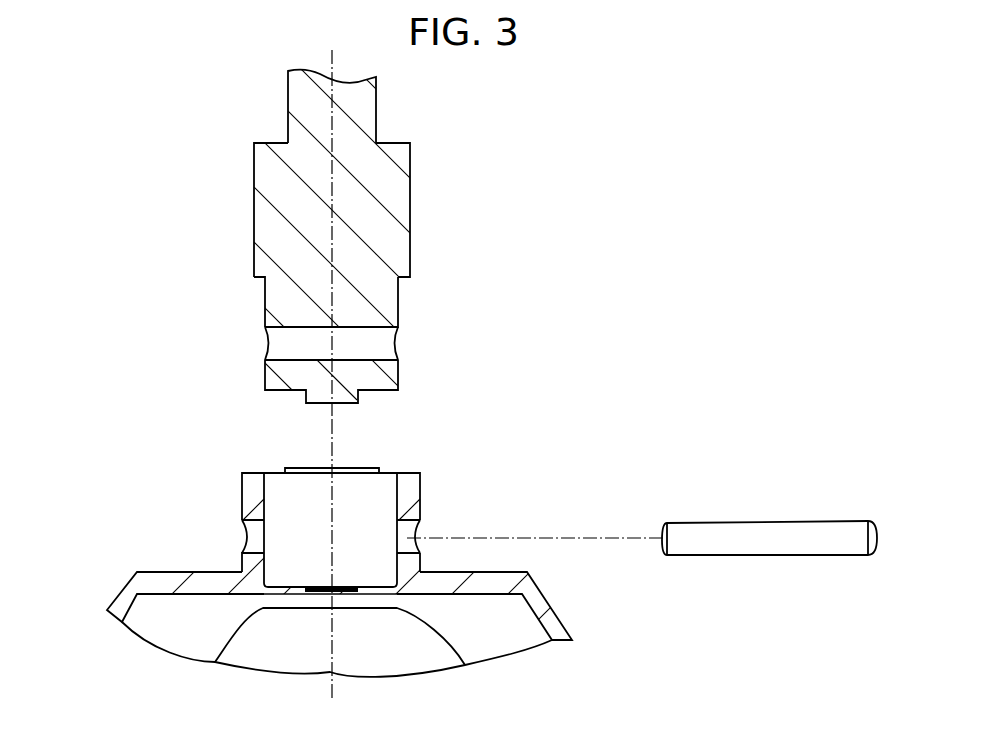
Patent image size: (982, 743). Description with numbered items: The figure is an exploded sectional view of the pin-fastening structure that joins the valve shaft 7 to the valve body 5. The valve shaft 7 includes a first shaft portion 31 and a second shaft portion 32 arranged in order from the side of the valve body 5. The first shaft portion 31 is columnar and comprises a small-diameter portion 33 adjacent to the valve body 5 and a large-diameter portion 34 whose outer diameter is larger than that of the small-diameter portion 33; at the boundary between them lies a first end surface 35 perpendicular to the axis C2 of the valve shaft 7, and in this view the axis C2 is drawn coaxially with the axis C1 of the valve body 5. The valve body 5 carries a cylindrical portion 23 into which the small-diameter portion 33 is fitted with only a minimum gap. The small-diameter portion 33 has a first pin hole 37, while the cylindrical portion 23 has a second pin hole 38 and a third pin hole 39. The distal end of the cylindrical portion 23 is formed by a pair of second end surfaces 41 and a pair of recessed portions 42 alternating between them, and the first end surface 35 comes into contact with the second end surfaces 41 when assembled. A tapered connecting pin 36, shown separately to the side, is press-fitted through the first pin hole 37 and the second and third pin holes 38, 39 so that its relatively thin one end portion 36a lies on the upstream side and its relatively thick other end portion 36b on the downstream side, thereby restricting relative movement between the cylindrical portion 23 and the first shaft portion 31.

The valve body 5 is at (112, 589).
The valve shaft 7 is at (320, 201).
The cylindrical portion 23 is at (331, 487).
The first shaft portion 31 is at (433, 235).
The second shaft portion 32 is at (378, 100).
The small-diameter portion 33 is at (385, 298).
The large-diameter portion 34 is at (387, 228).
The first end surface 35 is at (259, 292).
The connecting pin 36 is at (642, 544).
The one end portion 36a is at (692, 542).
The other end portion 36b is at (840, 547).
The first pin hole 37 is at (360, 354).
The second pin hole 38 is at (413, 531).
The third pin hole 39 is at (243, 537).
The second end surfaces 41 is at (355, 467).
The recessed portions 42 is at (397, 473).
The axis of the valve body C1 is at (332, 681).
The axis of the valve shaft C2 is at (335, 230).